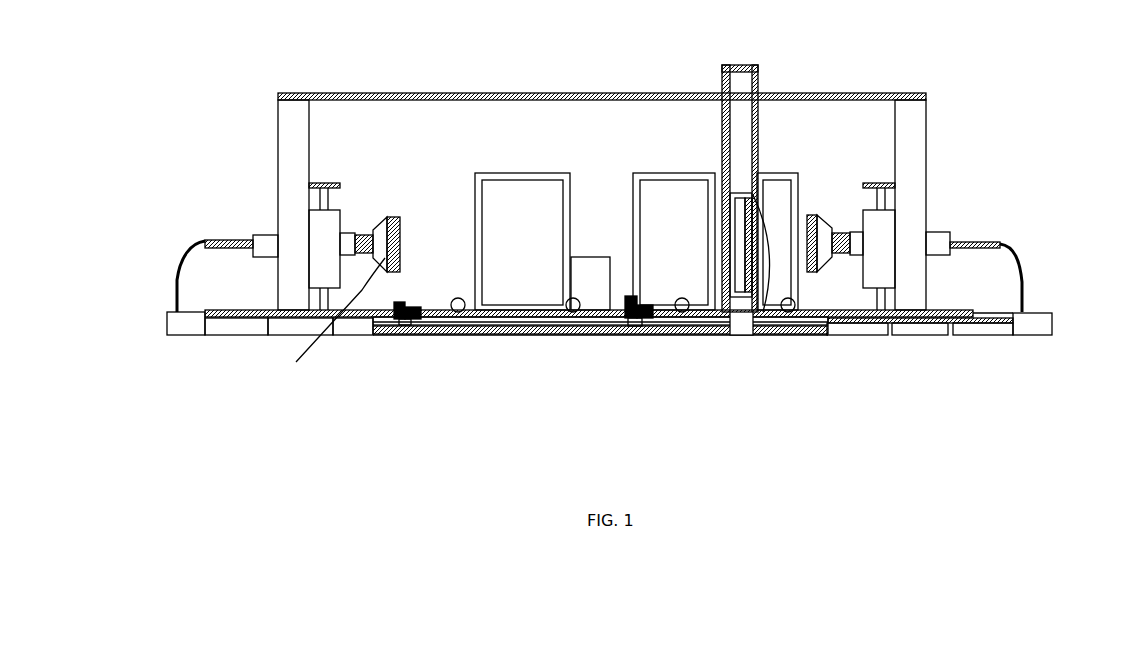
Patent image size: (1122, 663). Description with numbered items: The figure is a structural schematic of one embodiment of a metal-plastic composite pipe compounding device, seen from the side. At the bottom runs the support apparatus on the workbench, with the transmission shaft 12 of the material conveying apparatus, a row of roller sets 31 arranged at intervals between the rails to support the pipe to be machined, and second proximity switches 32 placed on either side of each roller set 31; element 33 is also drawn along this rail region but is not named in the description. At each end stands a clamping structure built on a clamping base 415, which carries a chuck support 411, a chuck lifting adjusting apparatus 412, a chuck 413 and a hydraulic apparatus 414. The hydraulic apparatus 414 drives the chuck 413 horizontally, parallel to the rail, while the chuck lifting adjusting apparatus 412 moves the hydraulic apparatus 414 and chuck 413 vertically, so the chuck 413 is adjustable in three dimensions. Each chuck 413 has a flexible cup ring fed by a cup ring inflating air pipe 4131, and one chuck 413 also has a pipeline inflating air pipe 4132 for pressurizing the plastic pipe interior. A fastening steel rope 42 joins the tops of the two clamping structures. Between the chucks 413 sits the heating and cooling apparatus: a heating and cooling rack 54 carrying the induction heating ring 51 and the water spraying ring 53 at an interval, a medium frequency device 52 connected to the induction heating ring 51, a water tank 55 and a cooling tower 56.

The transmission shaft 12 is at (501, 336).
The roller set 31 is at (446, 336).
The second proximity switch 32 is at (588, 336).
The sliding block 33 is at (541, 336).
The fastening steel rope 42 is at (563, 100).
The induction heating ring 51 is at (722, 183).
The medium frequency device 52 is at (663, 192).
The water spraying ring 53 is at (758, 213).
The heating and cooling rack 54 is at (747, 143).
The water tank 55 is at (585, 263).
The cooling tower 56 is at (520, 193).
The chuck support 411 is at (295, 143).
The chuck lifting adjusting apparatus 412 is at (327, 227).
The chuck 413 is at (377, 228).
The hydraulic apparatus 414 is at (265, 242).
The clamping base 415 is at (252, 310).
The cup ring inflating air pipe 4131 is at (323, 313).
The pipeline inflating air pipe 4132 is at (183, 268).